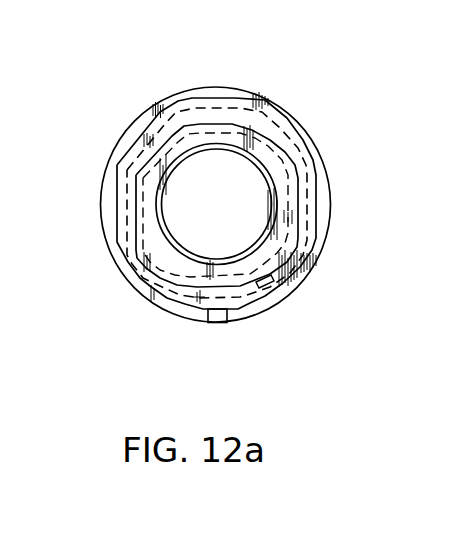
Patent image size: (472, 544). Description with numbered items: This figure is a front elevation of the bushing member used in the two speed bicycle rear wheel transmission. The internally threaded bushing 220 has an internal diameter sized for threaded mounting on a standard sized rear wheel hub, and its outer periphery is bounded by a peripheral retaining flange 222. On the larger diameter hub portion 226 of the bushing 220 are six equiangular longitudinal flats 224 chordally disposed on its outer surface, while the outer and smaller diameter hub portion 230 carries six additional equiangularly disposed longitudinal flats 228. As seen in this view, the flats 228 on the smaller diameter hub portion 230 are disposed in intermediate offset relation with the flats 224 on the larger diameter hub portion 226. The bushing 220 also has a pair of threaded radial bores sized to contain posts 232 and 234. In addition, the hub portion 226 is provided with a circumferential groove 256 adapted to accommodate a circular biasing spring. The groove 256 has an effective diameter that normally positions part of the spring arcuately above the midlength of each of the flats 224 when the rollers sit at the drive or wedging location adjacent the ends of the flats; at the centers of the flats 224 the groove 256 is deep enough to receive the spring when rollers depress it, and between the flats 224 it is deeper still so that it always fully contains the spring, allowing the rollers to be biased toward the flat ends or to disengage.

The internally threaded bushing 220 is at (217, 199).
The peripheral retaining flange 222 is at (203, 86).
The longitudinal flats 224 is at (283, 122).
The larger diameter hub portion 226 is at (236, 112).
The additional longitudinal flats 228 is at (288, 163).
The smaller diameter hub portion 230 is at (157, 233).
The post 232 is at (210, 322).
The post 234 is at (272, 282).
The circumferential groove 256 is at (172, 118).